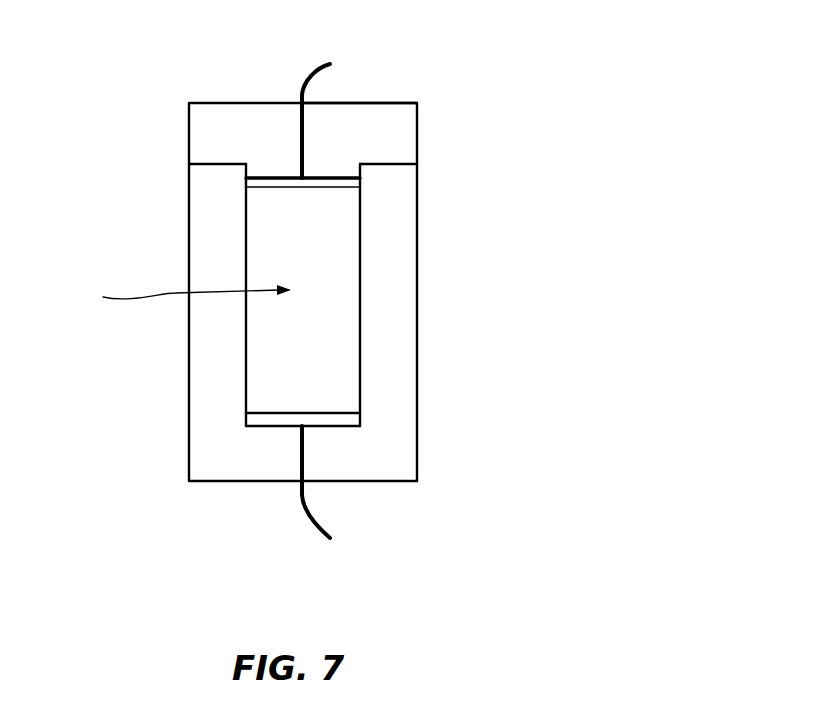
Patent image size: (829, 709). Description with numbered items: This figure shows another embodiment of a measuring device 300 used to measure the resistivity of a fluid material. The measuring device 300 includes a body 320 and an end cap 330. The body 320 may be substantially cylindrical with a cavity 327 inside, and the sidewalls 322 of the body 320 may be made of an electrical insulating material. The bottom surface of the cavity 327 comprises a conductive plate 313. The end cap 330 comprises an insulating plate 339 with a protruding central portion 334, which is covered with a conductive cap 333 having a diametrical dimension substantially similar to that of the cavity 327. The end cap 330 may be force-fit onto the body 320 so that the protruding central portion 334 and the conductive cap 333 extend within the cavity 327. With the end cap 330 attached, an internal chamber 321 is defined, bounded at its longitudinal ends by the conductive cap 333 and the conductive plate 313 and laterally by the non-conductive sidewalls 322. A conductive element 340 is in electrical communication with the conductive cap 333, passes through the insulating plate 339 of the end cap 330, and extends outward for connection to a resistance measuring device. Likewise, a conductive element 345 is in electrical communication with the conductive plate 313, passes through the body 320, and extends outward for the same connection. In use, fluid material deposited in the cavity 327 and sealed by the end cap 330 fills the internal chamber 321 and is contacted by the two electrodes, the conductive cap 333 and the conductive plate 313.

The measuring device 300 is at (564, 117).
The end cap 330 is at (189, 136).
The insulating plate 339 is at (380, 128).
The conductive element 340 is at (310, 72).
The conductive element 345 is at (300, 507).
The sidewalls 322 is at (213, 227).
The body 320 is at (397, 277).
The conductive cap 333 is at (335, 183).
The protruding central portion 334 is at (268, 170).
The conductive plate 313 is at (352, 420).
The internal chamber 321 is at (322, 356).
The cavity 327 is at (175, 297).